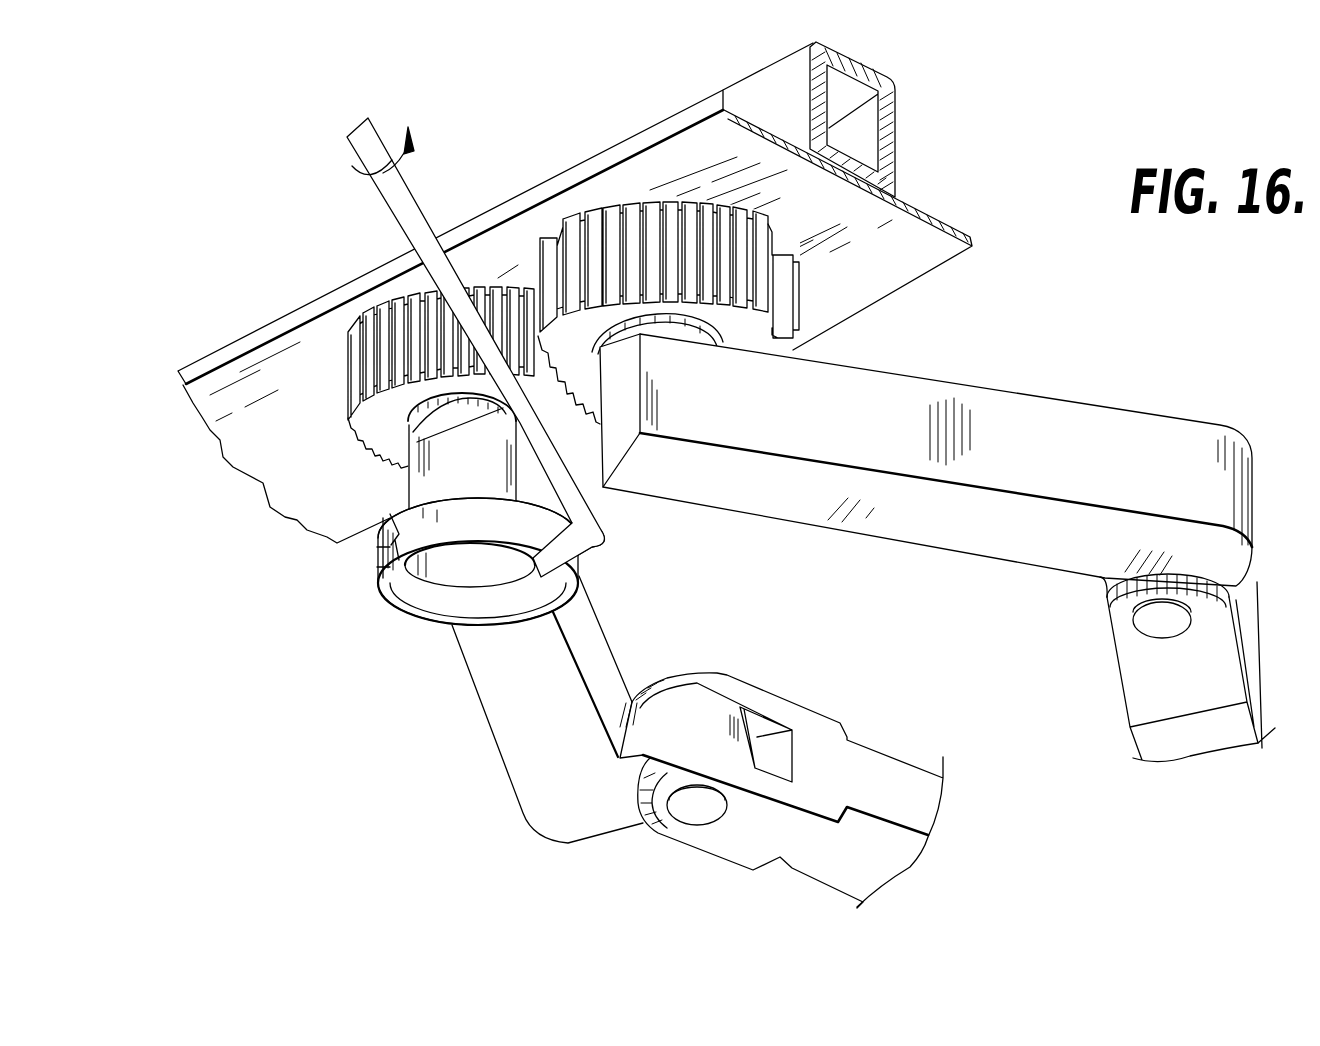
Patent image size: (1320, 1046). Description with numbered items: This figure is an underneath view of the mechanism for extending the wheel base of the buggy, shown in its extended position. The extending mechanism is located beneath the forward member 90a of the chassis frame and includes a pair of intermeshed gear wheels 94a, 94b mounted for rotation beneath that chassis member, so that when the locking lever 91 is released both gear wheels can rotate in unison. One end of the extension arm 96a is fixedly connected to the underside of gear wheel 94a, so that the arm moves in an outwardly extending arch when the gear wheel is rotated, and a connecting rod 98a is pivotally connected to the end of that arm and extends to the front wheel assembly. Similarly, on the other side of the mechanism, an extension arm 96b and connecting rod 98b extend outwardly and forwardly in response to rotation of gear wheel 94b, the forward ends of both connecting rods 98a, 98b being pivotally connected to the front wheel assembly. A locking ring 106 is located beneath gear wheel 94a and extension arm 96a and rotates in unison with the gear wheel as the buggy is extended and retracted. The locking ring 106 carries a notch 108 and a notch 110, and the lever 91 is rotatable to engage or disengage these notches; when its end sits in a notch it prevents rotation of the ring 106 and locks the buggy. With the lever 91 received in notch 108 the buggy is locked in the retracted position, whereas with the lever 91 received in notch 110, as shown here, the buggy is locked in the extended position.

The forward member of the chassis frame 90a is at (938, 195).
The locking lever 91 is at (417, 227).
The gear wheel 94a is at (387, 343).
The gear wheel 94b is at (753, 283).
The extension arm 96a is at (512, 697).
The extension arm 96b is at (1020, 450).
The connecting rod 98a is at (880, 777).
The connecting rod 98b is at (1177, 669).
The locking ring 106 is at (437, 598).
The notch 108 is at (400, 557).
The notch 110 is at (613, 517).